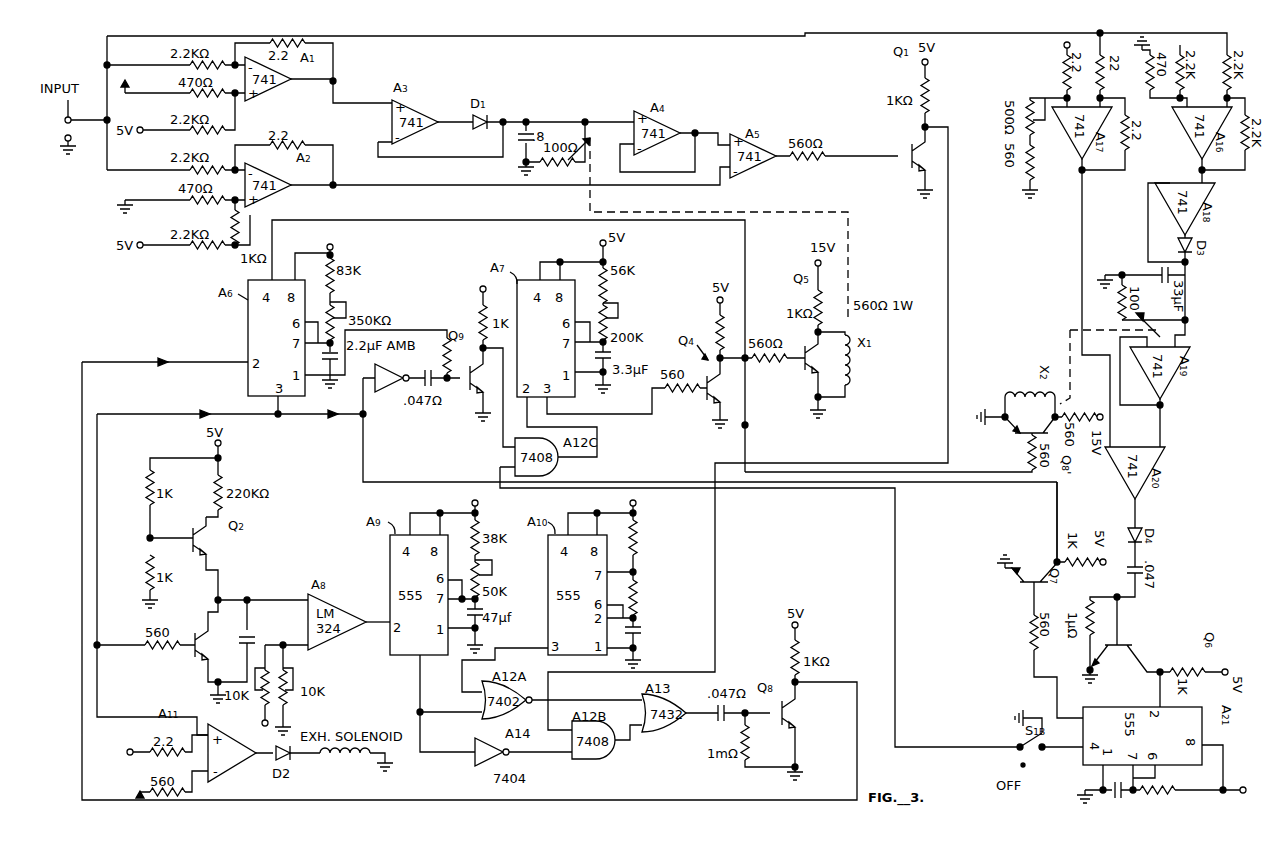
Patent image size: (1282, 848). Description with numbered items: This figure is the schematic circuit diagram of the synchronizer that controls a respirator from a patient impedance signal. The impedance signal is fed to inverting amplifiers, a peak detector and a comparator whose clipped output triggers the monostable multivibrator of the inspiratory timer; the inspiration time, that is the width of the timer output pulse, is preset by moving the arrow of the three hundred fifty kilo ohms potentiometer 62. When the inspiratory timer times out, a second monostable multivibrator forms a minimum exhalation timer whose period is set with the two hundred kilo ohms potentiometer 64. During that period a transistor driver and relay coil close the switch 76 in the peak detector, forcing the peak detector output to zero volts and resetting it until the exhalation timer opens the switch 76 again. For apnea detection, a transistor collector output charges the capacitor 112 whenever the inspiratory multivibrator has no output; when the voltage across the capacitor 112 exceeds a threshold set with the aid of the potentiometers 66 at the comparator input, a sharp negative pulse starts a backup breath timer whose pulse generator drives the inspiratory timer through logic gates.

The 350 kilo ohms potentiometer 62 is at (338, 315).
The 200 kilo ohms potentiometer 64 is at (612, 314).
The potentiometers 66 is at (294, 700).
The switch 76 is at (592, 138).
The capacitor 112 is at (245, 640).